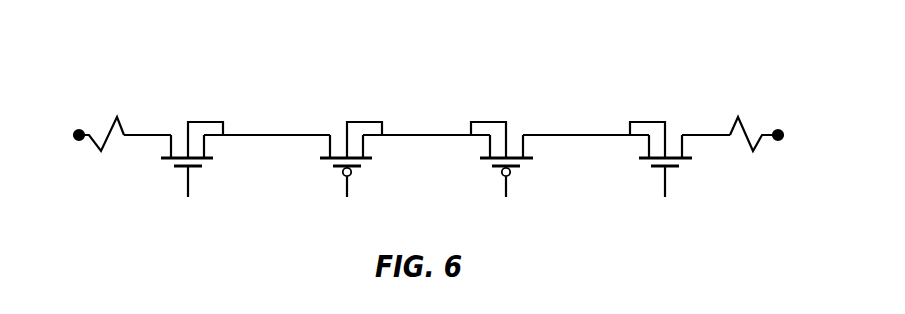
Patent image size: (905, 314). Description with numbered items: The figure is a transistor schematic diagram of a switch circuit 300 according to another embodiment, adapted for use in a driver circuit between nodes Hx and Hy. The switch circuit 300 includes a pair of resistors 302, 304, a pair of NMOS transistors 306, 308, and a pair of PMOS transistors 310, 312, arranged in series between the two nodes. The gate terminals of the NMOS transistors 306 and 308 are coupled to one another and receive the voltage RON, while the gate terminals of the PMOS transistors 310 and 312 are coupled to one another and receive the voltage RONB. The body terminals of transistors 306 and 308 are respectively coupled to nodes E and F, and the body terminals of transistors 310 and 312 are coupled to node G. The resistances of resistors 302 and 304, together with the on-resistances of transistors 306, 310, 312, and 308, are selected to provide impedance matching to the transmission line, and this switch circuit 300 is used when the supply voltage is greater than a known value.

The switch circuit 300 is at (609, 66).
The resistor 302 is at (117, 117).
The resistor 304 is at (738, 117).
The NMOS transistor 306 is at (182, 141).
The NMOS transistor 308 is at (675, 140).
The PMOS transistor 310 is at (340, 142).
The PMOS transistor 312 is at (513, 142).